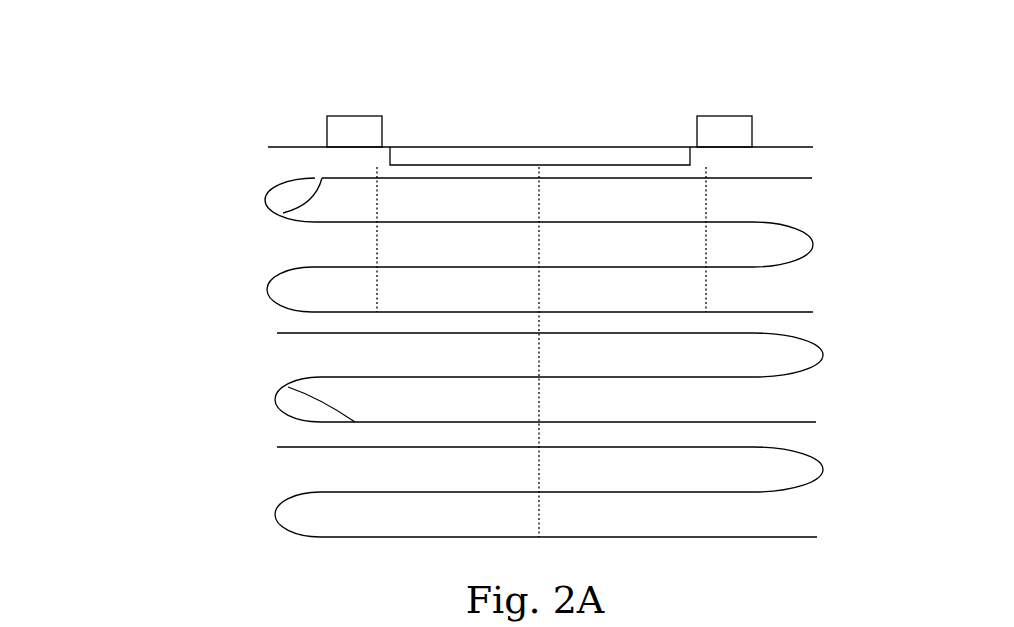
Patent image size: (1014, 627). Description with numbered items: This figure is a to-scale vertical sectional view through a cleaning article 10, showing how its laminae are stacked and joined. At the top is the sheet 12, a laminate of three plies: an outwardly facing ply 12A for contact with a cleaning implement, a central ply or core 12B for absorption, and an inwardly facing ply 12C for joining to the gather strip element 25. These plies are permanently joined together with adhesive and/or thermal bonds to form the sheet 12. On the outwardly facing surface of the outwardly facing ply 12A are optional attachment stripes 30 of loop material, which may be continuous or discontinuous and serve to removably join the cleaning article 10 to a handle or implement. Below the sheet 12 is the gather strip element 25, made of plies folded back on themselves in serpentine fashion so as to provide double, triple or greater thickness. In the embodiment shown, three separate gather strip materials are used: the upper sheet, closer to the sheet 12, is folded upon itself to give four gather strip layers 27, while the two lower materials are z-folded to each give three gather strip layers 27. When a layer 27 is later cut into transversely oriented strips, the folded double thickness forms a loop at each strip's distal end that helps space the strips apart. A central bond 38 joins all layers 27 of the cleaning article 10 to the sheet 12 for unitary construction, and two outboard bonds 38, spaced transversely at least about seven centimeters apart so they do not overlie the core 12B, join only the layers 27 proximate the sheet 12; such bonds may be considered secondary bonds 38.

The cleaning article 10 is at (899, 534).
The sheet 12 is at (613, 134).
The outwardly facing ply 12A is at (765, 129).
The central ply/core 12B is at (700, 165).
The inwardly facing ply 12C is at (598, 190).
The gather strip element 25 is at (466, 352).
The gather strip layer 27 is at (312, 267).
The attachment stripes 30 is at (680, 100).
The bond 38 is at (377, 201).